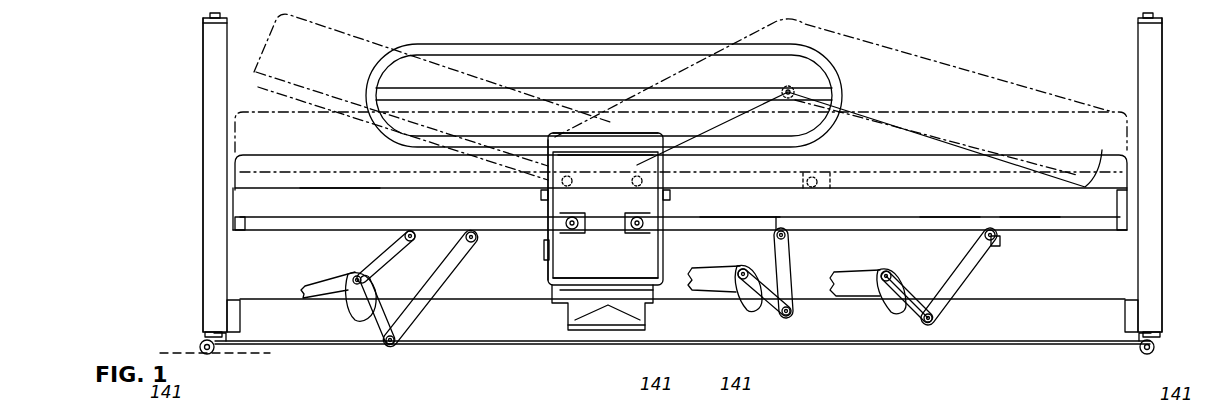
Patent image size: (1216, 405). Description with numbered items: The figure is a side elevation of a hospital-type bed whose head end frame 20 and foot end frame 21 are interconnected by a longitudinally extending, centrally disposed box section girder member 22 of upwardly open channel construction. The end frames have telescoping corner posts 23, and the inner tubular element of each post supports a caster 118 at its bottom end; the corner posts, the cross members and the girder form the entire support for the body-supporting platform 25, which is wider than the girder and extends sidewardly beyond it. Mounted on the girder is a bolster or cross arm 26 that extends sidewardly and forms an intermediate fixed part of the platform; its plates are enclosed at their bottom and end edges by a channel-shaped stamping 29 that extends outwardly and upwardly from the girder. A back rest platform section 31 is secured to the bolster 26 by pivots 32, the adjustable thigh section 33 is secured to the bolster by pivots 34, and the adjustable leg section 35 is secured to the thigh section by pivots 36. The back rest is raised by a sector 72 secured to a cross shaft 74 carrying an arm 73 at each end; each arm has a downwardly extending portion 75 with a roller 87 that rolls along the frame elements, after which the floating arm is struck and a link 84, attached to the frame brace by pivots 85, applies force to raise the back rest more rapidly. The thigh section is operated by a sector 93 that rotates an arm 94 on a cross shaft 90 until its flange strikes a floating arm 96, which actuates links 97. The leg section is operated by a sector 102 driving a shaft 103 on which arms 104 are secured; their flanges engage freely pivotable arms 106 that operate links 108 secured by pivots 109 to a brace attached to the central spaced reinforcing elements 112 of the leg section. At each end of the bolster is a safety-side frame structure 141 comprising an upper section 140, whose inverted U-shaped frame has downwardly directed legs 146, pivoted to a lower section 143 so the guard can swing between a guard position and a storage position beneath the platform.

The head end frame 20 is at (206, 168).
The foot end frame 21 is at (1164, 207).
The box section girder member 22 is at (832, 343).
The telescoping corner post 23 is at (222, 60).
The platform 25 is at (289, 233).
The bolster 26 is at (605, 231).
The channel-shaped stamping 29 is at (625, 248).
The back rest platform section 31 is at (332, 222).
The pivot 32 is at (580, 216).
The thigh section 33 is at (730, 228).
The pivot 34 is at (635, 216).
The leg section 35 is at (932, 196).
The pivot 36 is at (818, 216).
The sector 72 is at (328, 277).
The arm 73 is at (388, 266).
The cross shaft 74 is at (370, 278).
The downwardly extending portion 75 is at (353, 303).
The link 84 is at (460, 260).
The pivot 85 is at (474, 232).
The roller 87 is at (410, 231).
The cross shaft 90 is at (746, 269).
The sector 93 is at (735, 264).
The arm 94 is at (752, 300).
The floating arm 96 is at (766, 288).
The link 97 is at (790, 258).
The sector 102 is at (880, 270).
The shaft 103 is at (895, 270).
The arm 104 is at (886, 296).
The arm 106 is at (908, 285).
The link 108 is at (966, 268).
The pivot 109 is at (1000, 238).
The central spaced reinforcing element 112 is at (1036, 204).
The caster 118 is at (200, 335).
The upper section 140 is at (612, 132).
The safety-side frame structure 141 is at (376, 74).
The lower section 143 is at (668, 204).
The downwardly directed leg 146 is at (546, 140).